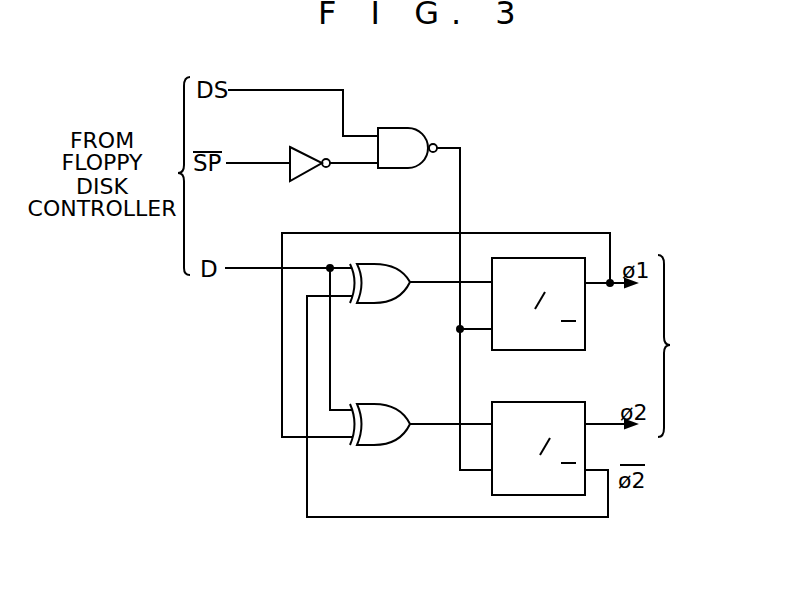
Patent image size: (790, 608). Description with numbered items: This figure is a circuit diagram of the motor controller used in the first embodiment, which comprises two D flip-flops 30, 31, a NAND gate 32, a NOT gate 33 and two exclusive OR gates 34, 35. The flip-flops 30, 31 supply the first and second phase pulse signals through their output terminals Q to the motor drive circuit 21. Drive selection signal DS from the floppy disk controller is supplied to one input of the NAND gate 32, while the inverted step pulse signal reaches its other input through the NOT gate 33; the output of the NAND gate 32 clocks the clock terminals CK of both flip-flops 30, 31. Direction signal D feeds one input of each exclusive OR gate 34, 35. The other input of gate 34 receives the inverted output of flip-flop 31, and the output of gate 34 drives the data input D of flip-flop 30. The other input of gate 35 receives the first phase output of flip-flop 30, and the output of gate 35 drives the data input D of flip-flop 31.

The motor drive circuit 21 is at (711, 346).
The D flip-flop 30 is at (585, 350).
The D flip-flop 31 is at (492, 402).
The NAND gate 32 is at (408, 128).
The NOT gate 33 is at (312, 181).
The exclusive OR gate 34 is at (375, 303).
The exclusive OR gate 35 is at (398, 404).